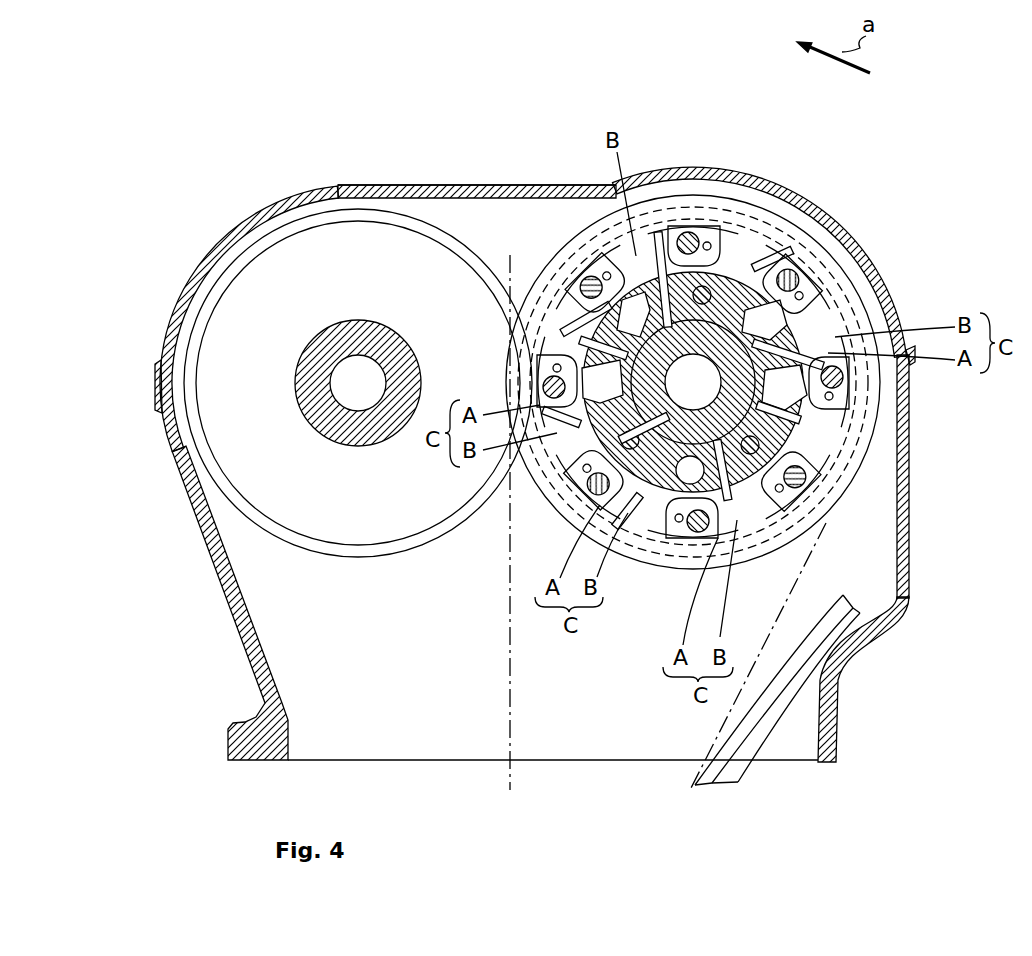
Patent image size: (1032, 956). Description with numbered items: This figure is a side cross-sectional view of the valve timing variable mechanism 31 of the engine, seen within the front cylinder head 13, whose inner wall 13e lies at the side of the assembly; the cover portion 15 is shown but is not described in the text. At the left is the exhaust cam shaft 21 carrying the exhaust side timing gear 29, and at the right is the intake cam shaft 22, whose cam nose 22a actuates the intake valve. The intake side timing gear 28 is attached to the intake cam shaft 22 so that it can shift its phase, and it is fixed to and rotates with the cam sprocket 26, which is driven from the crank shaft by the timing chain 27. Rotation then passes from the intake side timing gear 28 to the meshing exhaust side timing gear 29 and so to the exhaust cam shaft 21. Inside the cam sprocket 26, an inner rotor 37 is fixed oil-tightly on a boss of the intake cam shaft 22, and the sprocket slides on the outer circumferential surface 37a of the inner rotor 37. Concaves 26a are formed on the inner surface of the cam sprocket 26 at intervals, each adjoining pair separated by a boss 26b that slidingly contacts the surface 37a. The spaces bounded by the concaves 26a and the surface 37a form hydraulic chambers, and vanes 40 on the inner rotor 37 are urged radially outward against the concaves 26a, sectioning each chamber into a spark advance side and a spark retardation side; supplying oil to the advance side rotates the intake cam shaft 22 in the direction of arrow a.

The front cylinder head 13 is at (912, 590).
The inner wall 13e is at (837, 723).
The housing cover portion 15 is at (868, 247).
The exhaust cam shaft 21 is at (303, 350).
The intake cam shaft 22 is at (535, 258).
The cam nose 22a is at (835, 427).
The cam sprocket 26 is at (688, 190).
The concave 26a is at (822, 297).
The boss 26b is at (612, 258).
The timing chain 27 is at (797, 582).
The intake side timing gear 28 is at (594, 238).
The exhaust side timing gear 29 is at (350, 212).
The valve timing variable mechanism 31 is at (534, 256).
The inner rotor 37 is at (640, 520).
The outer circumferential surface 37a is at (825, 303).
The vane 40 is at (630, 250).